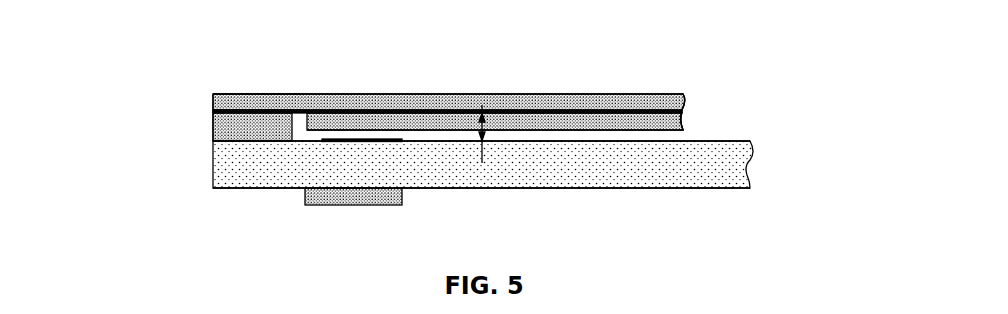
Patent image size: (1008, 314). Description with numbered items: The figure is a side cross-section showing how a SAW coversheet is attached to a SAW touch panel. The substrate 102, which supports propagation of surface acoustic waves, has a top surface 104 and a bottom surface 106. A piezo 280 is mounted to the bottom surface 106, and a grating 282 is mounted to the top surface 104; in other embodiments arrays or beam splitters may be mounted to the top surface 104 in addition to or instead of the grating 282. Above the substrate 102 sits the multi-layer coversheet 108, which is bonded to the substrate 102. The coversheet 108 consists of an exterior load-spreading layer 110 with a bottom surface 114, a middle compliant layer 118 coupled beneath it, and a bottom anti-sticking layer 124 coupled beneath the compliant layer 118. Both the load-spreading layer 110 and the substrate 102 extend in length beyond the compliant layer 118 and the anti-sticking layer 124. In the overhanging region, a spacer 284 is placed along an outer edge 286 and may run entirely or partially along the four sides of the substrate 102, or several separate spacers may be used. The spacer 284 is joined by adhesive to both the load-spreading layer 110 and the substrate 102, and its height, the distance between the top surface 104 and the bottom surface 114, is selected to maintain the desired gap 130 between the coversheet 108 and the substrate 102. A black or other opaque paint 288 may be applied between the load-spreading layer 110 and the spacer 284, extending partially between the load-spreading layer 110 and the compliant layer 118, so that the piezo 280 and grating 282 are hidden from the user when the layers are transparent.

The substrate 102 is at (745, 168).
The top surface 104 is at (735, 141).
The bottom surface 106 is at (712, 188).
The multi-layer coversheet 108 is at (798, 92).
The load-spreading layer 110 is at (683, 102).
The bottom surface 114 is at (615, 105).
The compliant layer 118 is at (683, 112).
The anti-sticking layer 124 is at (683, 125).
The gap 130 is at (482, 105).
The piezo 280 is at (356, 205).
The grating 282 is at (323, 142).
The spacer 284 is at (213, 125).
The outer edge 286 is at (115, 167).
The opaque paint 288 is at (213, 109).